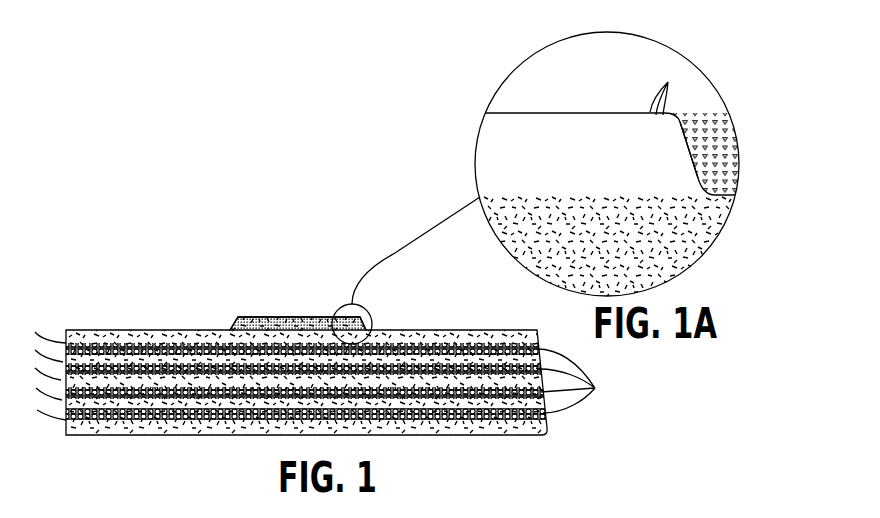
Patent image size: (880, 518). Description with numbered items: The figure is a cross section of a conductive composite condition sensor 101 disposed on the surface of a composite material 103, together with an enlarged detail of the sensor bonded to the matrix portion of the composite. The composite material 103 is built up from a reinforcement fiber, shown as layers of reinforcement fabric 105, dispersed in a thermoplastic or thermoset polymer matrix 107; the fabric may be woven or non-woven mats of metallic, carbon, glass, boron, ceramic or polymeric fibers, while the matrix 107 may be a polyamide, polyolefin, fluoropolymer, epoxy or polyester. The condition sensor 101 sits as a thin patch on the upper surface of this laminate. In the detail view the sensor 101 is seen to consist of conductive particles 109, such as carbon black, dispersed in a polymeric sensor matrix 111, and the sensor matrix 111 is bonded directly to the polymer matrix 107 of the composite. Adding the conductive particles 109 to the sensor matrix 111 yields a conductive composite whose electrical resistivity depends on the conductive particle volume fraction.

In FIG. 1, the conductive composite condition sensor 101 is at (273, 272).
In FIG. 1A, the conductive composite condition sensor 101 is at (571, 87).
In FIG. 1, the composite material 103 is at (109, 290).
In FIG. 1, the reinforcement fabric 105 is at (595, 388).
In FIG. 1, the polymer matrix 107 is at (37, 410).
In FIG. 1A, the polymer matrix 107 is at (653, 252).
In FIG. 1A, the conductive particles 109 is at (668, 82).
In FIG. 1A, the polymeric sensor matrix 111 is at (680, 128).